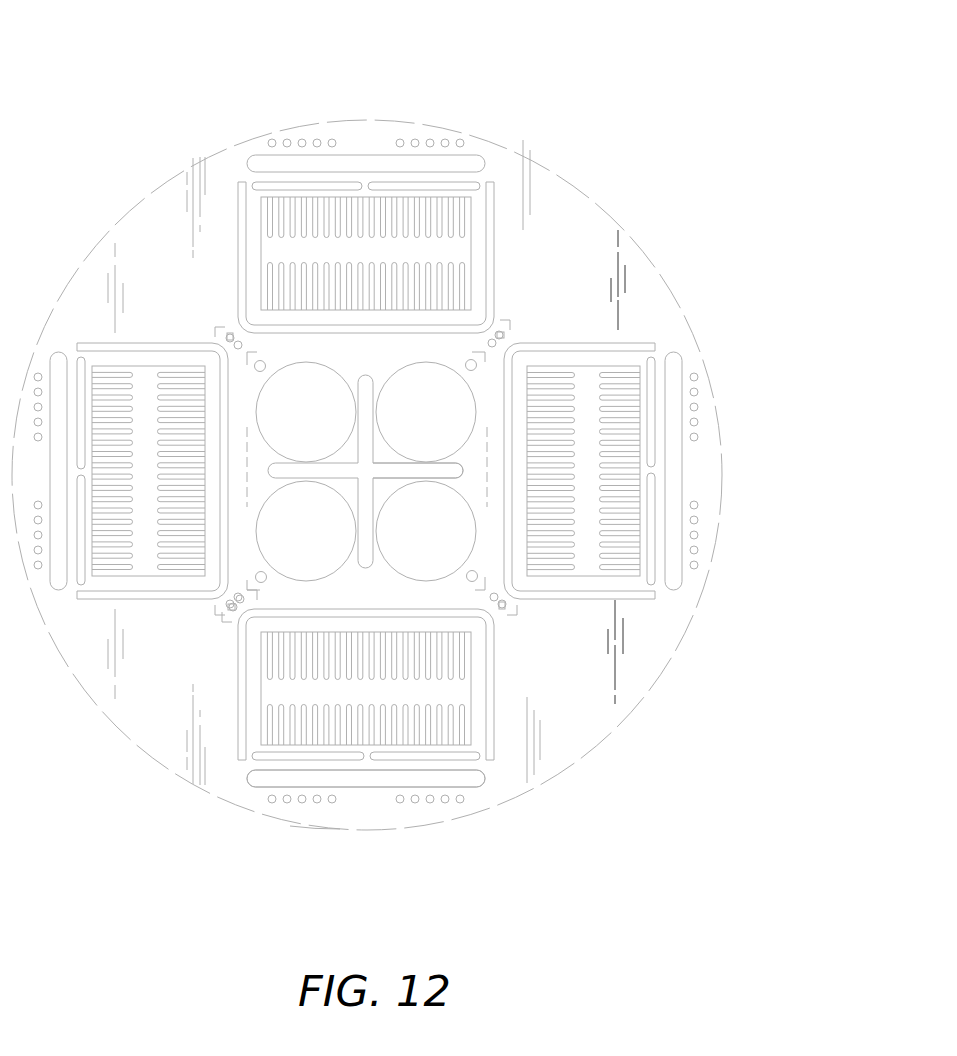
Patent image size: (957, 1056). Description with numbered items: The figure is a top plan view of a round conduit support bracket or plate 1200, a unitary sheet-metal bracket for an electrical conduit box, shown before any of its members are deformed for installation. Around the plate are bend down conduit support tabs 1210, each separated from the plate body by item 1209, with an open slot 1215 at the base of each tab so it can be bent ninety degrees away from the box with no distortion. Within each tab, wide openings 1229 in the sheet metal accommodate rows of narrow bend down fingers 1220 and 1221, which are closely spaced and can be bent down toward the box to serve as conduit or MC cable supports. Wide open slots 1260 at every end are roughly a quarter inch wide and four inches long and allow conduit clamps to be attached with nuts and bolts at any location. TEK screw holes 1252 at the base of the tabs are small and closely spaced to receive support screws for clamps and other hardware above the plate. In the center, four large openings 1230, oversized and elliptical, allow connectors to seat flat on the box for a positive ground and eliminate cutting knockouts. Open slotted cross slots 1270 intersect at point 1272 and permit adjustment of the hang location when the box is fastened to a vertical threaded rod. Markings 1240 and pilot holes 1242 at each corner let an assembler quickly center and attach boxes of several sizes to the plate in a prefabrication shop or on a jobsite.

The conduit support bracket or plate 1200 is at (120, 37).
The separating item 1209 is at (243, 207).
The bend down conduit support tab 1210 is at (473, 317).
The open slot 1215 is at (339, 187).
The narrow bend down finger 1220 is at (337, 213).
The bend down finger 1221 is at (380, 278).
The wide opening 1229 is at (297, 253).
The large opening 1230 is at (422, 535).
The marking 1240 is at (217, 620).
The hole 1242 is at (232, 600).
The TEK screw hole 1252 is at (322, 828).
The wide open slot 1260 is at (383, 782).
The open slotted cross slot 1270 is at (432, 467).
The intersection point 1272 is at (370, 465).